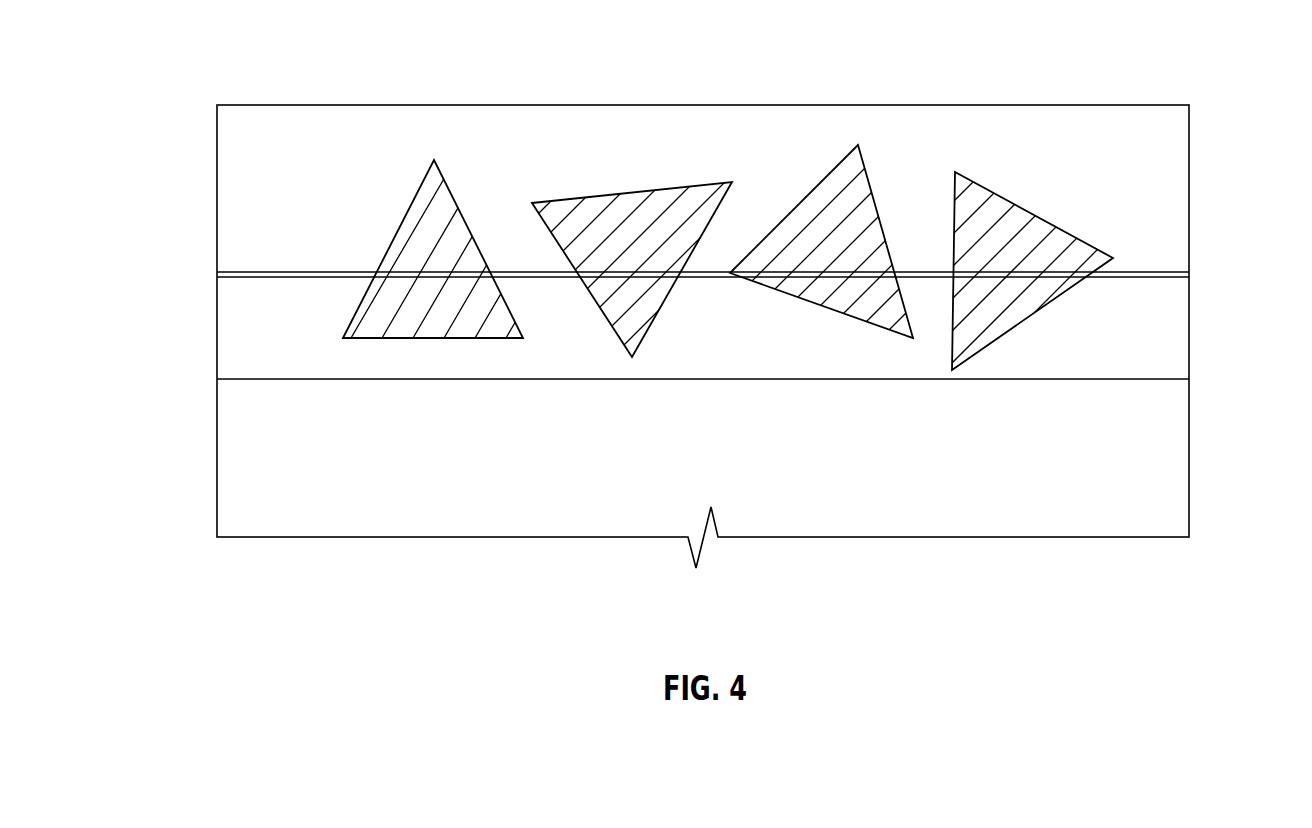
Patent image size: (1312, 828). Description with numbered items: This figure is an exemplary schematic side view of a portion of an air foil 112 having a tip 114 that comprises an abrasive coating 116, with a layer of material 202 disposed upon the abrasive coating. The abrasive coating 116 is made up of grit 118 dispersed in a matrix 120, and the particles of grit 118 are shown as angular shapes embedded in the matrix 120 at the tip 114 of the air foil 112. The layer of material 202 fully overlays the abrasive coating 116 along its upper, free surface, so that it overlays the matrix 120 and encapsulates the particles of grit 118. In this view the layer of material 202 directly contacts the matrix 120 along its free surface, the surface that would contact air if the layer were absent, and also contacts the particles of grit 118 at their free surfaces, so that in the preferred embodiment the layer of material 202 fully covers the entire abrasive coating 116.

The layer of material 202 is at (300, 127).
The abrasive coating 116 is at (200, 160).
The grit 118 is at (1022, 202).
The matrix 120 is at (1167, 330).
The tip 114 is at (1188, 379).
The air foil 112 is at (1167, 470).